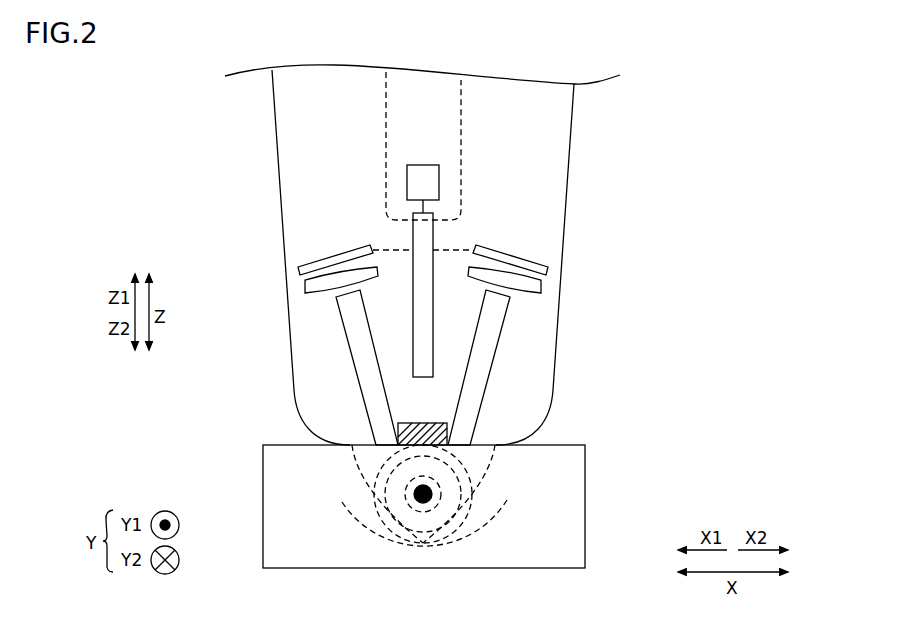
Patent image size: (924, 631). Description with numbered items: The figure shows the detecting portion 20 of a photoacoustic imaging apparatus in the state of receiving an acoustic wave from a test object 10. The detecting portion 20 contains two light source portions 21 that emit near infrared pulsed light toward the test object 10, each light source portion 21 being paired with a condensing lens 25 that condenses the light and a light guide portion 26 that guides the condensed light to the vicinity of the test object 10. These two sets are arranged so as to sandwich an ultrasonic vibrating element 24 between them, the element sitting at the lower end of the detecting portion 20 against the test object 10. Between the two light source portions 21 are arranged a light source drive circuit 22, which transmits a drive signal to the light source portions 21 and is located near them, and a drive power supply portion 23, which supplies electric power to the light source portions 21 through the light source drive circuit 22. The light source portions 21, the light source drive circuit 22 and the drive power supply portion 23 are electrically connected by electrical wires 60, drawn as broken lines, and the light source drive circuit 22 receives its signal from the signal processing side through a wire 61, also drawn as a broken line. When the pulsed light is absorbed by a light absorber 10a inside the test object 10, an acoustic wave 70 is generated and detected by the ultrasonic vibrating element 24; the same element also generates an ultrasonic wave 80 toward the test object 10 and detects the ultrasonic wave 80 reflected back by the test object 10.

The test object 10 is at (593, 487).
The light absorber 10a is at (430, 500).
The detecting portion 20 is at (568, 269).
The light source portion 21 is at (334, 255).
The light source drive circuit 22 is at (413, 292).
The drive power supply portion 23 is at (423, 165).
The ultrasonic vibrating element 24 is at (407, 423).
The condensing lens 25 is at (318, 293).
The light guide portion 26 is at (372, 430).
The electrical wires 60 is at (460, 232).
The wire 61 is at (462, 151).
The acoustic wave 70 is at (374, 505).
The ultrasonic wave 80 is at (505, 512).